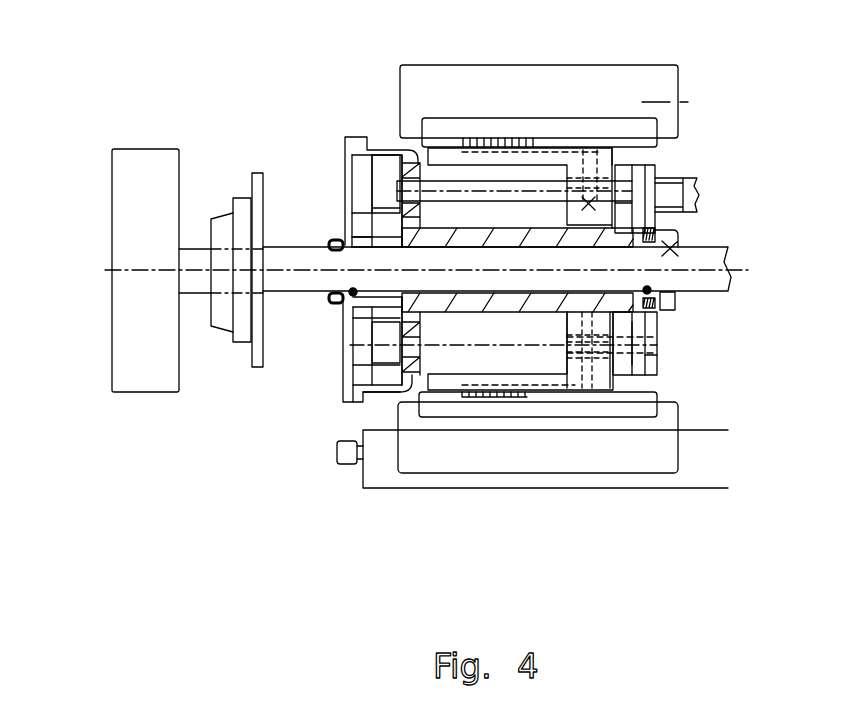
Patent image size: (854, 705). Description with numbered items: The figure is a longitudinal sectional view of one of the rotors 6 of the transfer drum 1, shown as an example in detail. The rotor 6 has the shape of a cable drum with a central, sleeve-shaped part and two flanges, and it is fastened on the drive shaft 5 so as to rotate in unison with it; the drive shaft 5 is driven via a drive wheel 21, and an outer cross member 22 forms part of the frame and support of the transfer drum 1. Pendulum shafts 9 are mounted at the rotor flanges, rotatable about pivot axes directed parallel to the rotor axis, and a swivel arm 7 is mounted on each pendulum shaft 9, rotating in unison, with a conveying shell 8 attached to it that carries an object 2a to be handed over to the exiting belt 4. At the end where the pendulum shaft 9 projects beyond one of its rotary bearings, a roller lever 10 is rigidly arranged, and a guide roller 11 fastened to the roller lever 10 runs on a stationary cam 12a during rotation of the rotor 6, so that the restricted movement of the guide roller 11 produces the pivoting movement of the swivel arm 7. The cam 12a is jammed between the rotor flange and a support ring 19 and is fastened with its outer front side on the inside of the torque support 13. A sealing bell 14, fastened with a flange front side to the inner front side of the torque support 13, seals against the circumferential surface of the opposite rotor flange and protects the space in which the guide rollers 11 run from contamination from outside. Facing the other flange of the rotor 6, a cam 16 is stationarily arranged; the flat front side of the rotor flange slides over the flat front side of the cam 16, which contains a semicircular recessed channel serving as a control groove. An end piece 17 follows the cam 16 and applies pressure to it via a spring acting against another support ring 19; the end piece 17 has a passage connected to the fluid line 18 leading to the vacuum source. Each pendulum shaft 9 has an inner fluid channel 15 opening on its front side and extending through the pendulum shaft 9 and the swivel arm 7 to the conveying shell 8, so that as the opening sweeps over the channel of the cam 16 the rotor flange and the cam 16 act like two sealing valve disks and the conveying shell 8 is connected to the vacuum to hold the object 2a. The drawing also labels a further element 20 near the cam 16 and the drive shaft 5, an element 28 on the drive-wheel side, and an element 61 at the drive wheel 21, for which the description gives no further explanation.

The transfer drum 1 is at (413, 160).
The object 2a is at (485, 90).
The exiting belt 4 is at (483, 486).
The drive shaft 5 is at (707, 258).
The rotor 6 is at (528, 238).
The swivel arm 7 is at (603, 165).
The conveying shell 8 is at (642, 142).
The pendulum shaft 9 is at (422, 192).
The roller lever 10 is at (388, 170).
The guide roller 11 is at (365, 167).
The cam 12a is at (363, 220).
The torque support 13 is at (343, 375).
The sealing bell 14 is at (383, 384).
The fluid channel 15 is at (623, 192).
The cam 16 is at (637, 329).
The end piece 17 is at (649, 363).
The fluid line 18 is at (699, 178).
The support ring 19 is at (333, 243).
The seal ring 20 is at (659, 229).
The drive wheel 21 is at (124, 319).
The cross member 22 is at (388, 292).
The hub 28 is at (353, 292).
The wheel shaft 61 is at (124, 272).